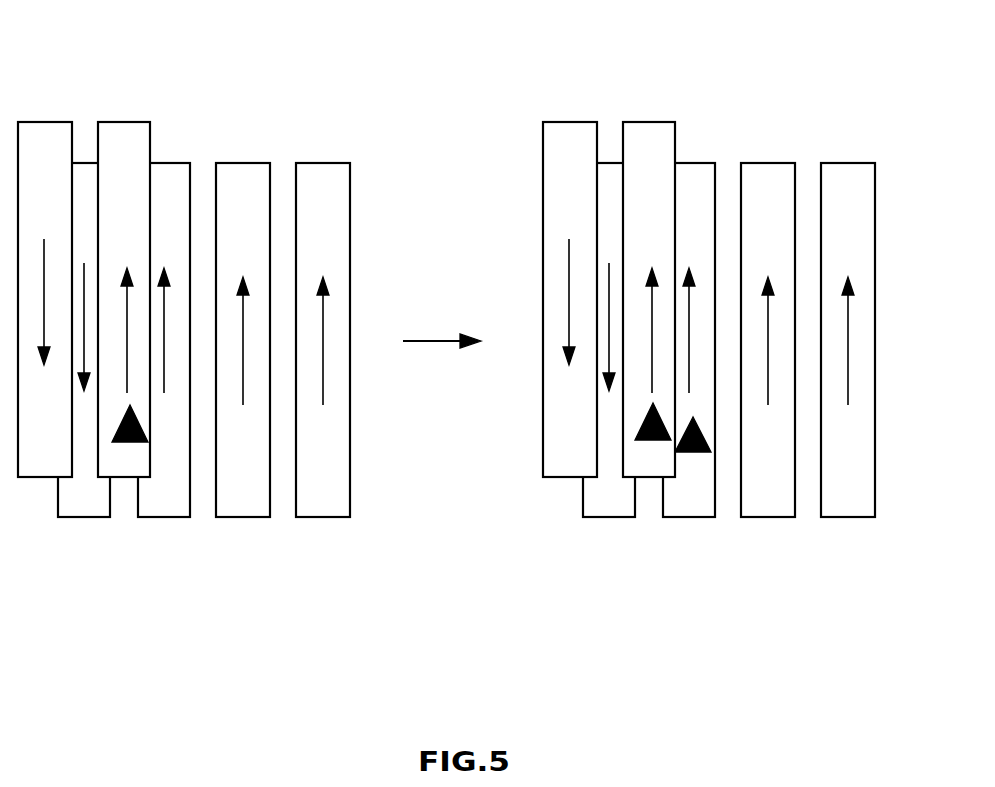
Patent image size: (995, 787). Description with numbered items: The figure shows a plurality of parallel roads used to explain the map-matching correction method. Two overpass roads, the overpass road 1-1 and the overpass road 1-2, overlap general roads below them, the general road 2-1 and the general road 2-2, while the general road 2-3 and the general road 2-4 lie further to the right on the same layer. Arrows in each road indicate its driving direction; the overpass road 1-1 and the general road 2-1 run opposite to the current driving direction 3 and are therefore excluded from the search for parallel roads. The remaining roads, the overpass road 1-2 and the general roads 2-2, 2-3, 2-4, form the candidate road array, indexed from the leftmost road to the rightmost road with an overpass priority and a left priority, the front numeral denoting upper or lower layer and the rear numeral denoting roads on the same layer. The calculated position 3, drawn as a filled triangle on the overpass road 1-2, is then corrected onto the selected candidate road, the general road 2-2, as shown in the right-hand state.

The overpass road 1-1 is at (32, 122).
The overpass road 1-2 is at (117, 122).
The general road 2-1 is at (84, 517).
The general road 2-2 is at (164, 517).
The general road 2-3 is at (243, 517).
The general road 2-4 is at (323, 517).
The current driving direction / calculated position 3 is at (112, 440).